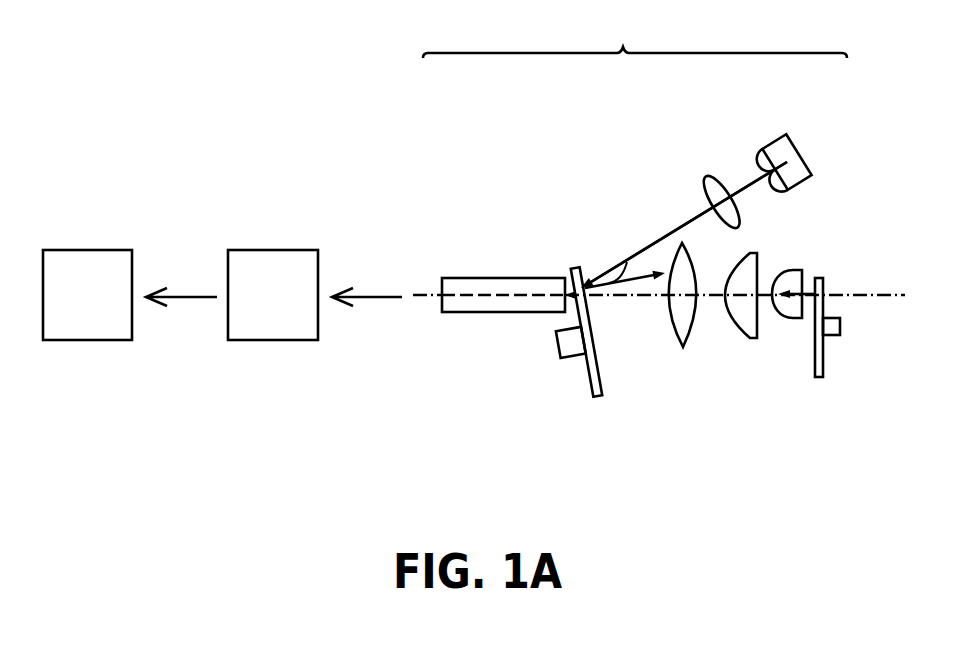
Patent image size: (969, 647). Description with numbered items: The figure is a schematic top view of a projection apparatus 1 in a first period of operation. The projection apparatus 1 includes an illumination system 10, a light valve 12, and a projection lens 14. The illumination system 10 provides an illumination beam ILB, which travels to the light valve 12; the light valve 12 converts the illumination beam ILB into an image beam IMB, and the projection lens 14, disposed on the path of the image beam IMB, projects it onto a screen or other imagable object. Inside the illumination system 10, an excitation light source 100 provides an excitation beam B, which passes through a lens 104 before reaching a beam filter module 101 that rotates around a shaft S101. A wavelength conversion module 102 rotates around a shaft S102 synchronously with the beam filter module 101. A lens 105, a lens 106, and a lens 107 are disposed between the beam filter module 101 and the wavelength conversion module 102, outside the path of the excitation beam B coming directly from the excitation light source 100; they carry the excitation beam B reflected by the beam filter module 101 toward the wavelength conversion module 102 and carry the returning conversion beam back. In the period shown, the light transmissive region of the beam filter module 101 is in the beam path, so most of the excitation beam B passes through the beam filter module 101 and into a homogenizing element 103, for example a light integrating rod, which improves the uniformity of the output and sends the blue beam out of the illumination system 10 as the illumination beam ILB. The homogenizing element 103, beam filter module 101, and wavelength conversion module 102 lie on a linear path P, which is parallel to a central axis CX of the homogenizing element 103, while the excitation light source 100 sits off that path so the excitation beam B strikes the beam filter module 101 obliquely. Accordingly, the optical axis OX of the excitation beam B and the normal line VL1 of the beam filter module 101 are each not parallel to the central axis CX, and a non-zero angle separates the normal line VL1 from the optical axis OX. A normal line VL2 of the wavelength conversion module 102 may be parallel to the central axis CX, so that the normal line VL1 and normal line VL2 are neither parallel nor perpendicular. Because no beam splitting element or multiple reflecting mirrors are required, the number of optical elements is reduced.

The projection apparatus 1 is at (901, 505).
The illumination system 10 is at (635, 34).
The light valve 12 is at (285, 310).
The projection lens 14 is at (100, 310).
The excitation light source 100 is at (785, 147).
The beam filter module 101 is at (597, 400).
The wavelength conversion module 102 is at (819, 378).
The homogenizing element 103 is at (502, 277).
The lens 104 is at (707, 177).
The lens 105 is at (680, 335).
The lens 106 is at (740, 318).
The lens 107 is at (793, 318).
The shaft of the beam filter module S101 is at (558, 340).
The shaft of the wavelength conversion module S102 is at (840, 327).
The excitation beam B is at (750, 184).
The optical axis of the excitation beam OX is at (680, 227).
The central axis of the homogenizing element CX is at (427, 295).
The normal line of the light effective region VL1 is at (630, 281).
The normal line of the wavelength conversion region VL2 is at (808, 292).
The linear path P is at (898, 293).
The image beam IMB is at (193, 298).
The illumination beam ILB is at (377, 298).